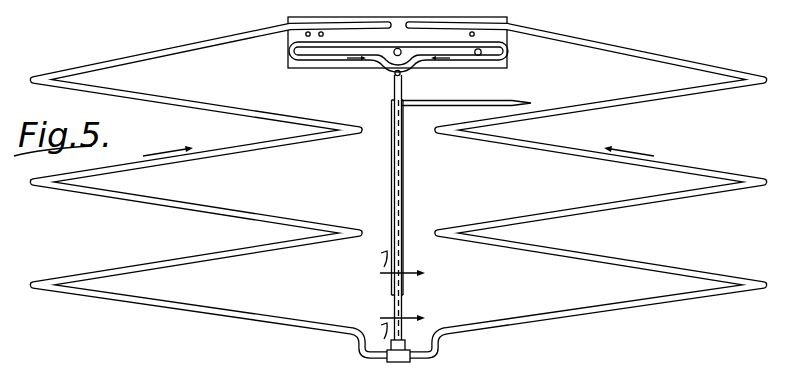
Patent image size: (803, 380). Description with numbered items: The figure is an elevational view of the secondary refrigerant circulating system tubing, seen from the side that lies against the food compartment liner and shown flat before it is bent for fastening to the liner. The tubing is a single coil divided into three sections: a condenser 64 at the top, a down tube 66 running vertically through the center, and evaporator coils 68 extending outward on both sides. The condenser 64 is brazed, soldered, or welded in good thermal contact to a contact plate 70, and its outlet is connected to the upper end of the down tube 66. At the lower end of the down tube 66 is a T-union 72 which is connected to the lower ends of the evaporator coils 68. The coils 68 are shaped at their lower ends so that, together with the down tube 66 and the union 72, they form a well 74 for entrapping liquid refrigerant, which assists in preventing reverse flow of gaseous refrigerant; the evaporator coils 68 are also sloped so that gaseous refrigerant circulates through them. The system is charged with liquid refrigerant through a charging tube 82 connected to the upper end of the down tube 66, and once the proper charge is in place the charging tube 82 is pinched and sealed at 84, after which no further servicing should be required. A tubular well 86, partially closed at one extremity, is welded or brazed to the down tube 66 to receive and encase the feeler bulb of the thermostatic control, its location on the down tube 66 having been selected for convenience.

The contact plate 70 is at (313, 50).
The condenser 64 is at (332, 62).
The evaporator coils 68 is at (220, 188).
The well 74 is at (357, 342).
The down tube 66 is at (404, 190).
The tubular well 86 is at (391, 187).
The charging tube 82 is at (479, 80).
The pinched and sealed point 84 is at (529, 104).
The T-union 72 is at (396, 361).